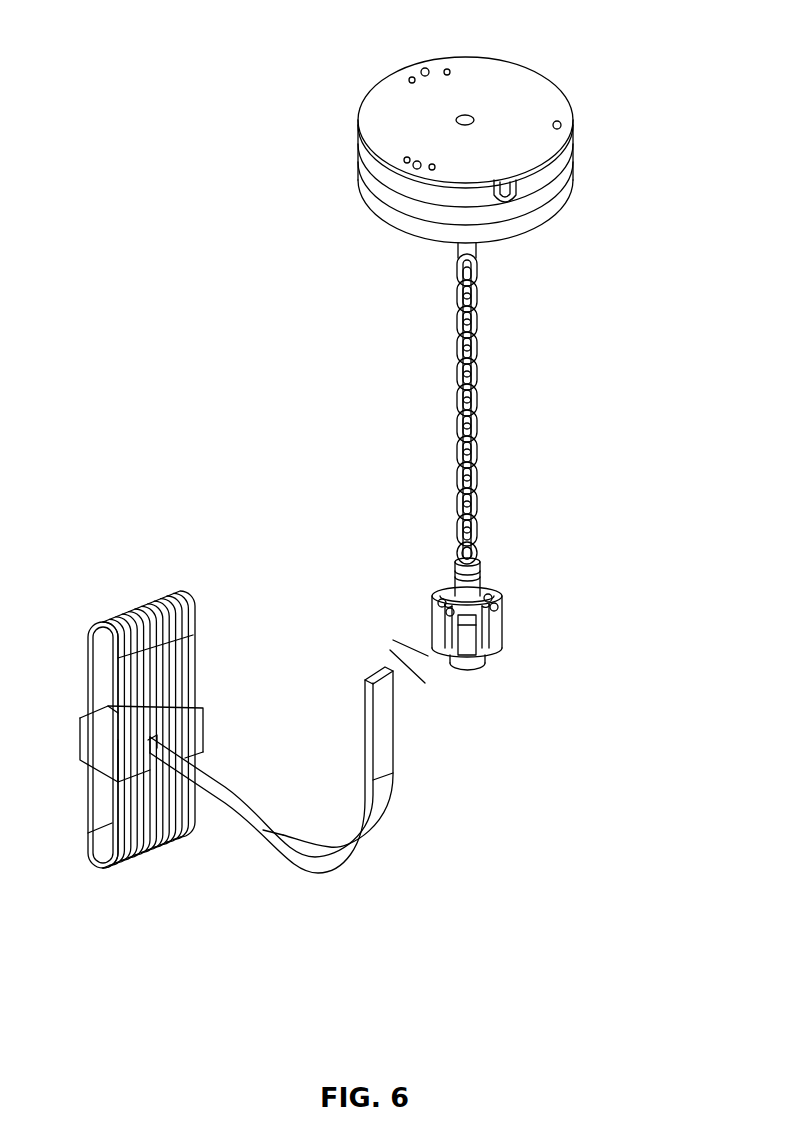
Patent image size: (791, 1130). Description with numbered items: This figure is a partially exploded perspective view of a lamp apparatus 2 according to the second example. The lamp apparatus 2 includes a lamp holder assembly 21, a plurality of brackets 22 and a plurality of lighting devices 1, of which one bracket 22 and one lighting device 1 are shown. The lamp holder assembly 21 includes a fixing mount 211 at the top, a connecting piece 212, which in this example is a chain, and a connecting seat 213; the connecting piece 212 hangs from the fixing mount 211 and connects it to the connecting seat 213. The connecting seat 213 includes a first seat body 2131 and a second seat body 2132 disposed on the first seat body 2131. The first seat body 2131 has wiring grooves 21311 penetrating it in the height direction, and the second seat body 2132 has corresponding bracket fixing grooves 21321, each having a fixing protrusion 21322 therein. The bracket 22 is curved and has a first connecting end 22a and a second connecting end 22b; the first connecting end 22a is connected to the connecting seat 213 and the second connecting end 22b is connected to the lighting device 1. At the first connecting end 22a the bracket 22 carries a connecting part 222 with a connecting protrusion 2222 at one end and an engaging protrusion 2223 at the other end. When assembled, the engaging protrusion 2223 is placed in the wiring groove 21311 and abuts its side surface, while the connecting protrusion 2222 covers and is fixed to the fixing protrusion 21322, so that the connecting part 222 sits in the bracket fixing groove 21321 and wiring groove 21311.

The lighting device 1 is at (115, 598).
The lamp apparatus 2 is at (225, 110).
The lamp holder assembly 21 is at (565, 410).
The fixing mount 211 is at (527, 90).
The connecting piece 212 is at (455, 420).
The connecting seat 213 is at (512, 585).
The first seat body 2131 is at (497, 655).
The second seat body 2132 is at (498, 585).
The wiring groove 21311 is at (448, 668).
The bracket fixing groove 21321 is at (435, 604).
The fixing protrusion 21322 is at (437, 620).
The bracket 22 is at (265, 878).
The first connecting end 22a is at (410, 713).
The second connecting end 22b is at (203, 725).
The connecting part 222 is at (400, 693).
The connecting protrusion 2222 is at (400, 668).
The engaging protrusion 2223 is at (400, 700).